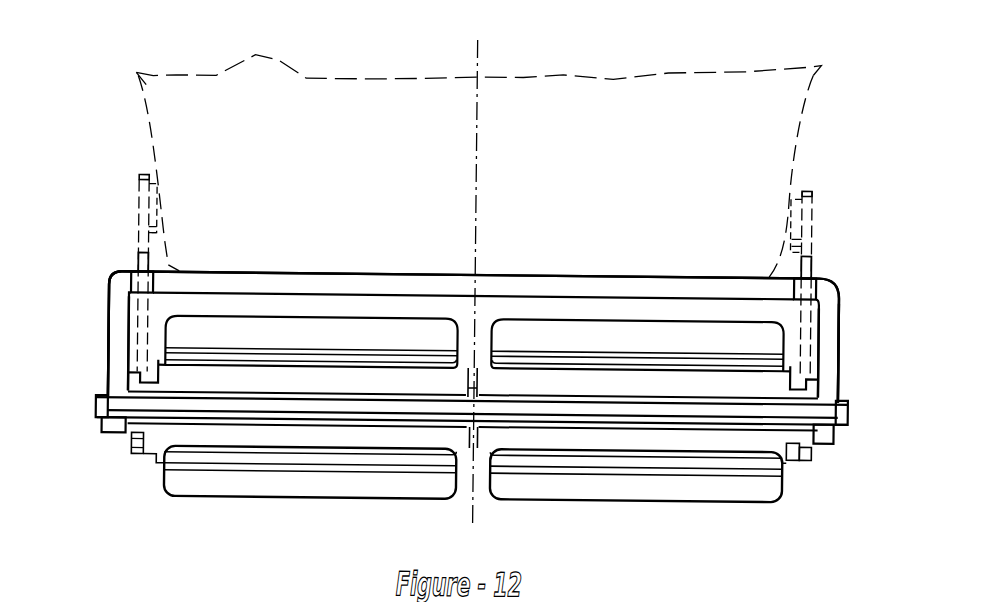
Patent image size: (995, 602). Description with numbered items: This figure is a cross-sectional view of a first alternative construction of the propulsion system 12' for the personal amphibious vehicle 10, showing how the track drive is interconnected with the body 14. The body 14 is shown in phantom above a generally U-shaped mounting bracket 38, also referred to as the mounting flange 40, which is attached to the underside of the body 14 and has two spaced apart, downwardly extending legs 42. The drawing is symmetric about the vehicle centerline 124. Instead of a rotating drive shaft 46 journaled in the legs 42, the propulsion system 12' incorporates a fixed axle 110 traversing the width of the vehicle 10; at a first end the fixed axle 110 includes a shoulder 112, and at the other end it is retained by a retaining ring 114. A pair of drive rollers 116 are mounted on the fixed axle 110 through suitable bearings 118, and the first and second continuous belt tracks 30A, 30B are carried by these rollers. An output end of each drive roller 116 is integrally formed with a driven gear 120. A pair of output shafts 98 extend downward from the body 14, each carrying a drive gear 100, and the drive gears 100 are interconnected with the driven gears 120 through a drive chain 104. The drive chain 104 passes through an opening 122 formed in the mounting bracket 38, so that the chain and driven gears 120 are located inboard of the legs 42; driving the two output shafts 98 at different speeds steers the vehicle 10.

The personal amphibious vehicle 10 is at (97, 84).
The vehicle centerline 124 is at (477, 68).
The body 14 is at (803, 88).
The output shafts 98 is at (136, 206).
The drive gear 100 is at (140, 183).
The drive chain 104 is at (135, 259).
The opening 122 is at (155, 273).
The propulsion system 12' is at (91, 273).
The legs 42 is at (108, 325).
The driven gear 120 is at (140, 376).
The retaining ring 114 is at (103, 394).
The bearings 118 is at (382, 397).
The drive rollers 116 is at (157, 460).
The first continuous belt track 30A is at (283, 499).
The second continuous belt track 30B is at (623, 500).
The fixed axle 110 is at (593, 438).
The mounting flange 40 is at (547, 276).
The mounting bracket 38 is at (617, 276).
The drive shaft 46 is at (785, 382).
The shoulder 112 is at (848, 400).